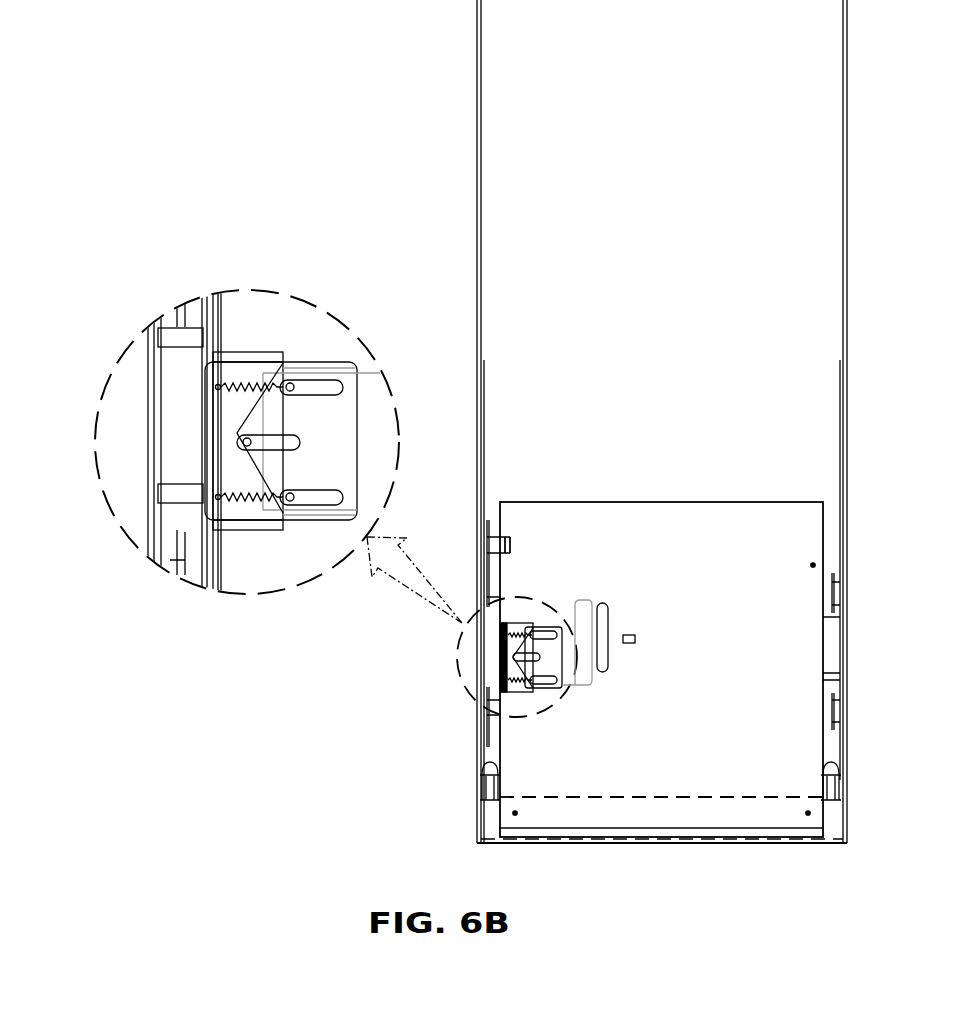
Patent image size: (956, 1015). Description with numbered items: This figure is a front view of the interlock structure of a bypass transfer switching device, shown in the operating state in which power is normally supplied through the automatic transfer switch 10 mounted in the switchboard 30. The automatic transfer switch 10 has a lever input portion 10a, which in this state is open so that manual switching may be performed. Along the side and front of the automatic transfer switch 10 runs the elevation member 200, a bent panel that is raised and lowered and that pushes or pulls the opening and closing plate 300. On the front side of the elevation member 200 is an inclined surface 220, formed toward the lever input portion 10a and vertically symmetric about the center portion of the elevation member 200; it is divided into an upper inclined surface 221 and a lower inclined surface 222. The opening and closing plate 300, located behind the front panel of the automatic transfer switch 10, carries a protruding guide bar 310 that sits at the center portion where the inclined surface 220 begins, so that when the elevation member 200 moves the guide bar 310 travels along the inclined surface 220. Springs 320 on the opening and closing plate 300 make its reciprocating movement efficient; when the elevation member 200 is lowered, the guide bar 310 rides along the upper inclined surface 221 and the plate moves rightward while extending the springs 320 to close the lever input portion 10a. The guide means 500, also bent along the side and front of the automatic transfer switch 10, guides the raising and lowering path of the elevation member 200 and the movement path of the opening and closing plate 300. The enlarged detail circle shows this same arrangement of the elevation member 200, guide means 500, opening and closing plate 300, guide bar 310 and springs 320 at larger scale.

The automatic transfer switch 10 is at (748, 510).
The lever input portion 10a is at (608, 618).
The switchboard 30 is at (478, 141).
The elevation member 200 is at (247, 357).
The inclined surface 220 is at (458, 410).
The upper inclined surface 221 is at (262, 407).
The lower inclined surface 222 is at (257, 467).
The opening and closing plate 300 is at (363, 368).
The guide bar 310 is at (245, 440).
The springs 320 is at (213, 365).
The guide means 500 is at (312, 363).